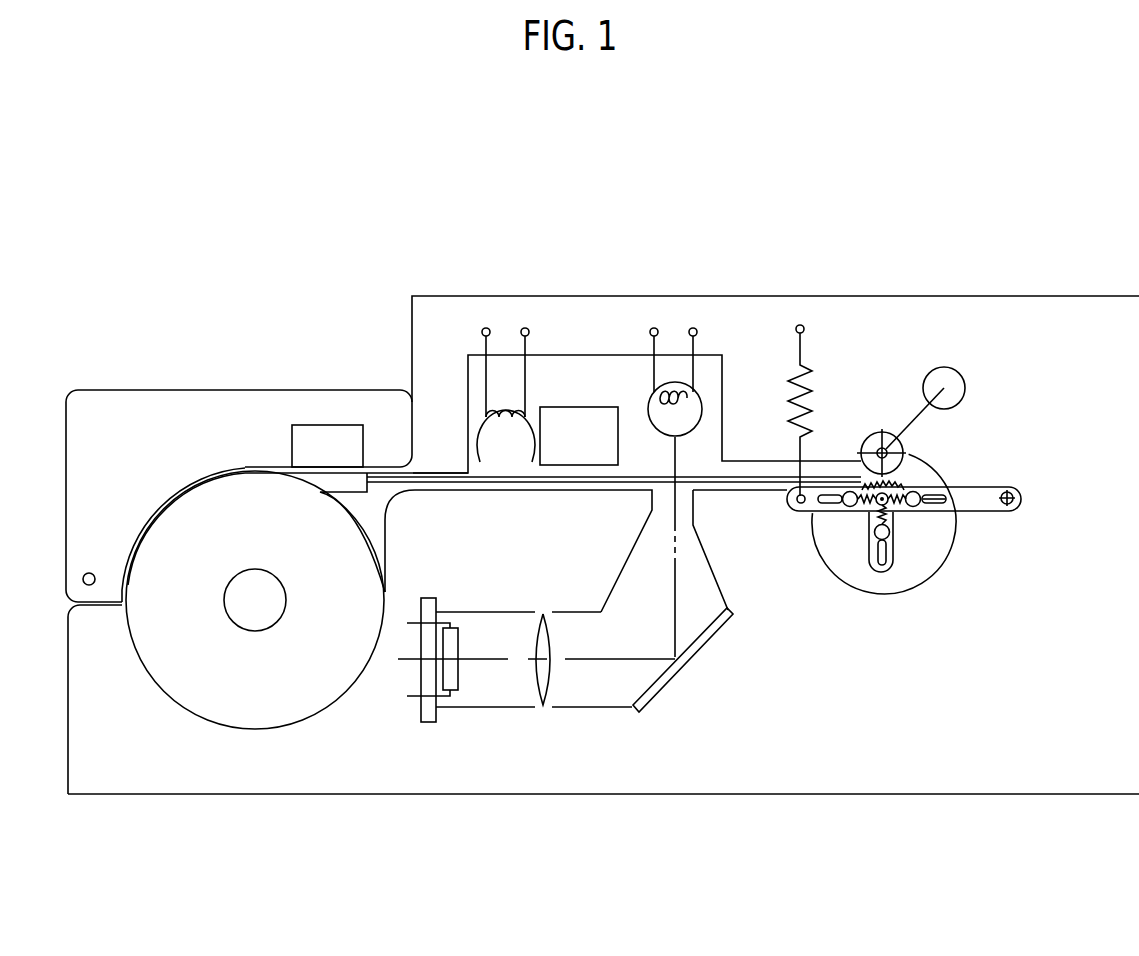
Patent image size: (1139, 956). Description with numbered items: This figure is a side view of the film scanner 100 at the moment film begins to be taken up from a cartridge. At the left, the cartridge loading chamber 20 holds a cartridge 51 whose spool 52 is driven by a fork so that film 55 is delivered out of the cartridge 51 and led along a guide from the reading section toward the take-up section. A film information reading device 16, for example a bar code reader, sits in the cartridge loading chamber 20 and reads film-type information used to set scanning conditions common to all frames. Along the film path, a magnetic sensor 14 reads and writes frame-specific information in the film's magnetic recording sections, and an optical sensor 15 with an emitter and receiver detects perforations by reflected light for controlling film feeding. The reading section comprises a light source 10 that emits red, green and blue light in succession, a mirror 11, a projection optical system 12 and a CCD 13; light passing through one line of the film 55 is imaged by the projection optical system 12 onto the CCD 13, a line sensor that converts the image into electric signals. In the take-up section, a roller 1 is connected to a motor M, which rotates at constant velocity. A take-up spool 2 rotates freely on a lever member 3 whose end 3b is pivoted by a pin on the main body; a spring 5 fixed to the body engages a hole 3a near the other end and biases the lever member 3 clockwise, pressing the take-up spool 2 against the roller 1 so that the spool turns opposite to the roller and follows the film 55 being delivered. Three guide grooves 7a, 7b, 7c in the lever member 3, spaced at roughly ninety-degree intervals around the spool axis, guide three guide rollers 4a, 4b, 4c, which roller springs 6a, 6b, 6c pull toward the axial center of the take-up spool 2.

The film scanner 100 is at (587, 794).
The cartridge 51 is at (223, 520).
The spool 52 is at (258, 608).
The cartridge loading chamber 20 is at (370, 518).
The film 55 is at (427, 481).
The film information reading device 16 is at (328, 442).
The magnetic sensor 14 is at (505, 345).
The optical sensor 15 is at (581, 427).
The light source 10 is at (675, 343).
The spring 5 is at (788, 397).
The roller 1 is at (877, 437).
The motor M is at (943, 378).
The take-up spool 2 is at (892, 490).
The lever member 3 is at (920, 539).
The hole 3a is at (802, 511).
The lever end 3b is at (1010, 494).
The guide groove 7a is at (828, 506).
The guide roller 4a is at (849, 507).
The roller spring 6a is at (862, 510).
The guide groove 7b is at (882, 565).
The guide roller 4b is at (913, 507).
The roller spring 6b is at (887, 513).
The roller spring 6c is at (923, 505).
The guide roller 4c is at (890, 535).
The guide groove 7c is at (937, 507).
The CCD 13 is at (455, 670).
The projection optical system 12 is at (545, 700).
The mirror 11 is at (646, 697).